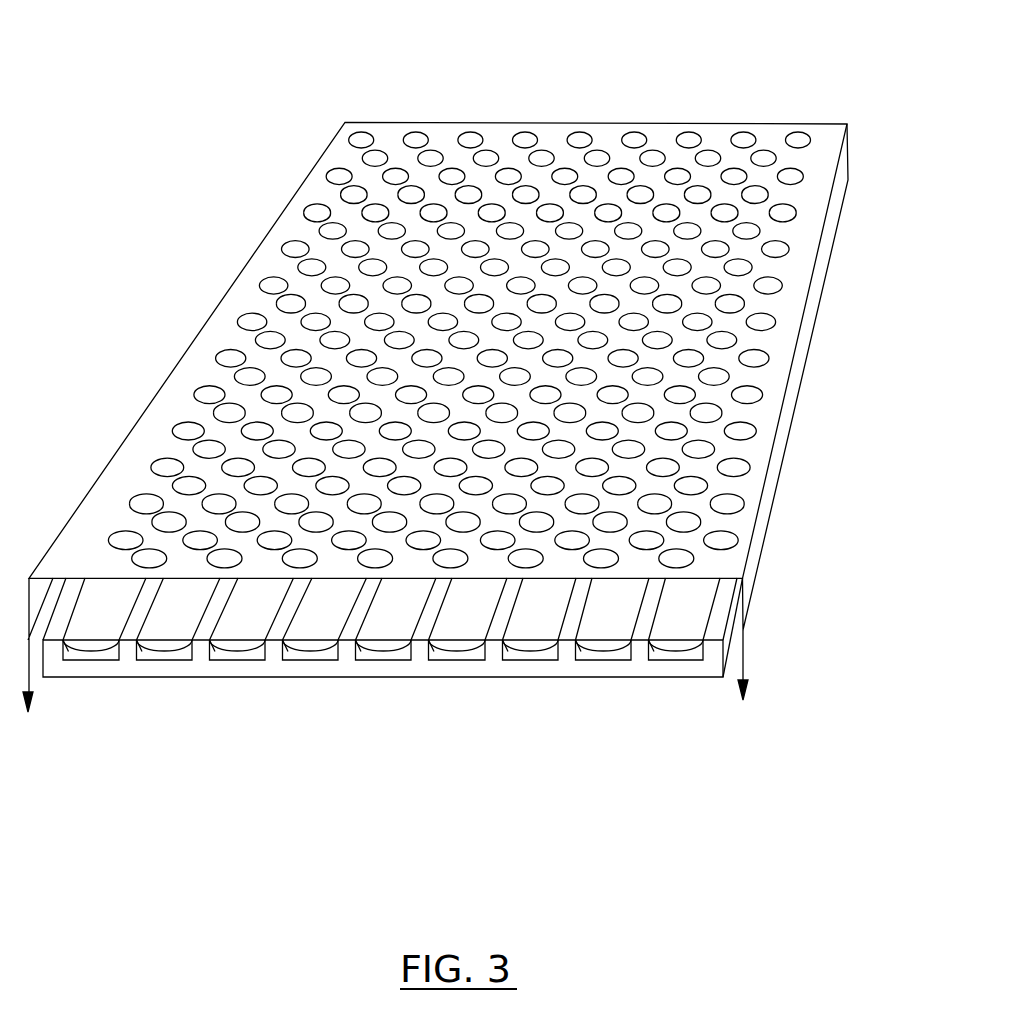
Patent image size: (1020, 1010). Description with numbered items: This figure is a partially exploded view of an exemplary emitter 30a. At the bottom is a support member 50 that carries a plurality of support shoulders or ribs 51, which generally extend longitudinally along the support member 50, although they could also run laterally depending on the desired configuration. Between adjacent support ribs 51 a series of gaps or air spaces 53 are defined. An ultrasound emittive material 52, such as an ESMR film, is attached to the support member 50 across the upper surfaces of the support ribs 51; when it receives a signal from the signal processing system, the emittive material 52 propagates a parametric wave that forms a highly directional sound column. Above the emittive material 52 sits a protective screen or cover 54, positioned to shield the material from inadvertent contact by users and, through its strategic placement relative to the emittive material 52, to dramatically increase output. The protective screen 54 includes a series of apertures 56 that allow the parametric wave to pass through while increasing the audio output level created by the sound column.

The emitter 30a is at (247, 115).
The support member 50 is at (535, 668).
The support ribs 51 is at (125, 662).
The ultrasound emittive material 52 is at (236, 652).
The gaps or air spaces 53 is at (143, 670).
The protective screen or cover 54 is at (158, 422).
The apertures 56 is at (222, 352).